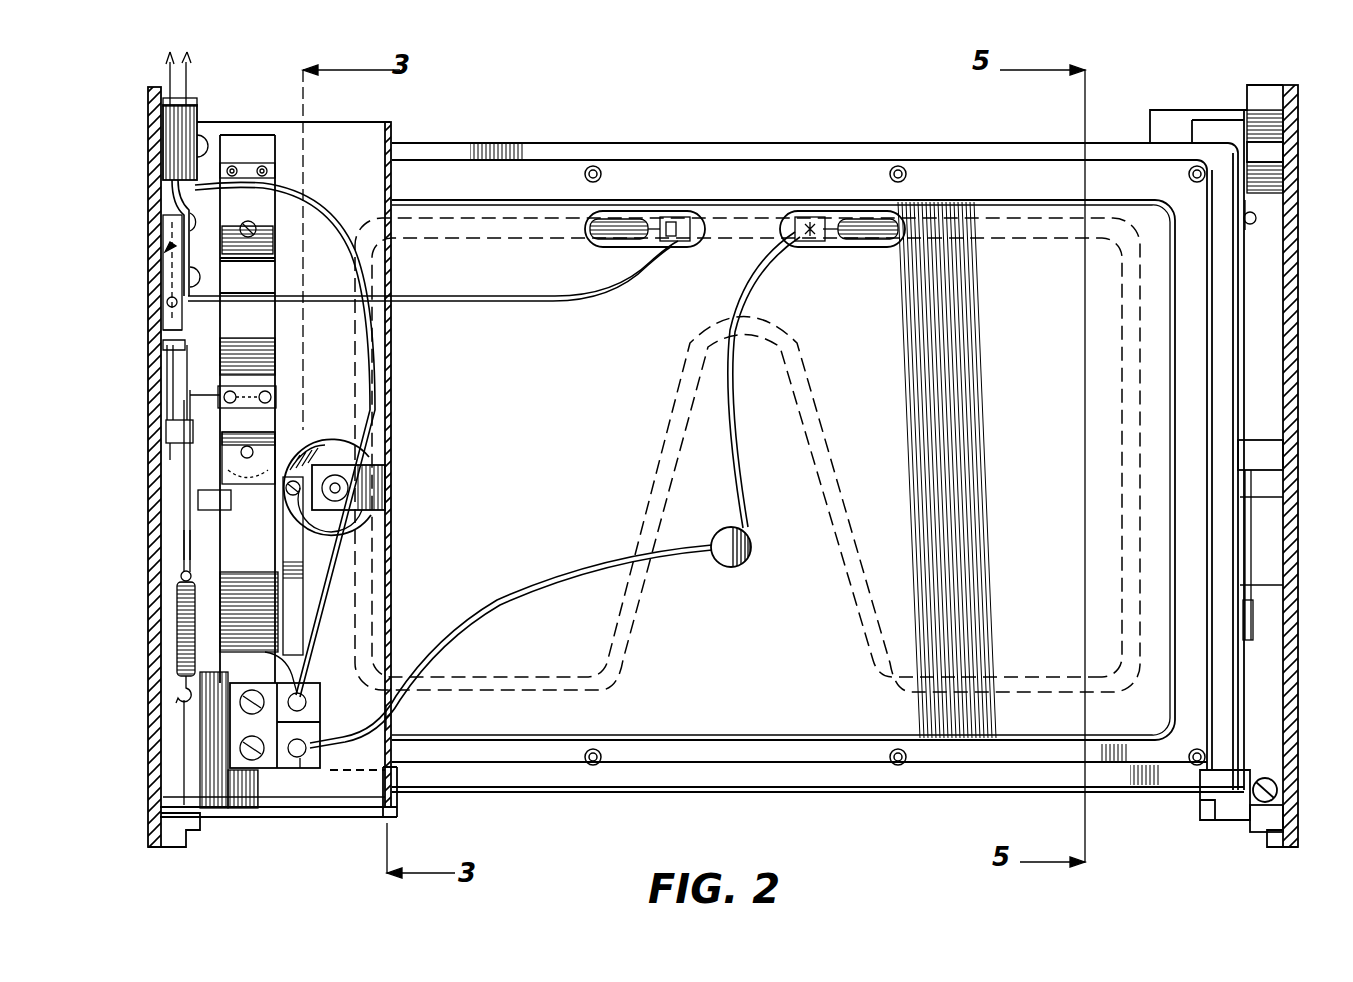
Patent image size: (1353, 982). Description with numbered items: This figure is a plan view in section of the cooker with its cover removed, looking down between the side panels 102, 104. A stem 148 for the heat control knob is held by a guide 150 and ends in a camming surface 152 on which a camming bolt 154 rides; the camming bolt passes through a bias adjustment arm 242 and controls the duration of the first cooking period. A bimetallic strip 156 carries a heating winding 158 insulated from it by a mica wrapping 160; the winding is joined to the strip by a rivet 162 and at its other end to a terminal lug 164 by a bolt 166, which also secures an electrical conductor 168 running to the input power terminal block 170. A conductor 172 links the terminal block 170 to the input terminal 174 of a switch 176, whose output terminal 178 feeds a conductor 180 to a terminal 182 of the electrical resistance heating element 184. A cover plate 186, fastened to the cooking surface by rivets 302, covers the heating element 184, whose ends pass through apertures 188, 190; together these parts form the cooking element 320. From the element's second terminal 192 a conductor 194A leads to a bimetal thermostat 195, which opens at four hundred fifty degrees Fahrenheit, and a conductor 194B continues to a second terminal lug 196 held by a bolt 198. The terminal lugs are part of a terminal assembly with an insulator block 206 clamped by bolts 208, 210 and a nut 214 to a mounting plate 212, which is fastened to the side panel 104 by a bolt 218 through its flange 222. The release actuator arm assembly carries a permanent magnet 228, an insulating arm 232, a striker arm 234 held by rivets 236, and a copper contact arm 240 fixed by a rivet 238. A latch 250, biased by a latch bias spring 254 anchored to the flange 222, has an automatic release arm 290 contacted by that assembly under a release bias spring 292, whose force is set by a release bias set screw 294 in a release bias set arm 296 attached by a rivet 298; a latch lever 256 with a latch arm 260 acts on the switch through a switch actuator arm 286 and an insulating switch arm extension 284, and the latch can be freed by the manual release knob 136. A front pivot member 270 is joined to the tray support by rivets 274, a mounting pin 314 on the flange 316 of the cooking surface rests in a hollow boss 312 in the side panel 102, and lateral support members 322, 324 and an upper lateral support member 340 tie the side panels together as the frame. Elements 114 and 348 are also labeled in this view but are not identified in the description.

The side panel 102 is at (1292, 292).
The side panel 104 is at (150, 275).
The bottom bracket 114 is at (1212, 800).
The manual release knob 136 is at (200, 498).
The stem 148 is at (385, 488).
The guide 150 is at (380, 500).
The camming surface 152 is at (392, 432).
The camming bolt 154 is at (300, 455).
The bimetallic strip 156 is at (184, 540).
The heating winding 158 is at (183, 570).
The mica wrapping 160 is at (180, 662).
The rivet 162 is at (250, 572).
The terminal lug 164 is at (315, 692).
The bolt 166 is at (395, 720).
The electrical conductor 168 is at (305, 610).
The input power terminal block 170 is at (163, 140).
The electrical conductor 172 is at (160, 195).
The input terminal 174 is at (163, 217).
The switch 176 is at (162, 246).
The output terminal 178 is at (167, 302).
The electrical conductor 180 is at (340, 298).
The terminal 182 is at (680, 217).
The electrical resistance heating element 184 is at (600, 238).
The cover plate 186 is at (742, 213).
The aperture 188 is at (622, 217).
The aperture 190 is at (852, 217).
The second terminal 192 is at (815, 247).
The electrical conductor 194A is at (725, 305).
The electrical conductor 194B is at (585, 568).
The thermostat 195 is at (740, 567).
The second terminal lug 196 is at (300, 770).
The bolt 198 is at (300, 758).
The insulator block 206 is at (240, 750).
The bolt 208 is at (205, 770).
The bolt 210 is at (240, 705).
The mounting plate 212 is at (320, 790).
The nut 214 is at (1258, 222).
The bolt 218 is at (228, 820).
The flange 222 is at (178, 695).
The permanent magnet 228 is at (265, 440).
The insulating arm 232 is at (170, 420).
The striker arm 234 is at (165, 330).
The rivets 236 is at (272, 390).
The rivet 238 is at (370, 530).
The copper contact arm 240 is at (268, 397).
The bias adjustment arm 242 is at (372, 557).
The latch 250 is at (184, 520).
The latch bias spring 254 is at (178, 615).
The latch lever 256 is at (168, 458).
The latch arm 260 is at (168, 437).
The front pivot member 270 is at (1255, 590).
The rivets 274 is at (1255, 615).
The switch arm extension 284 is at (163, 345).
The switch actuator arm 286 is at (186, 398).
The automatic release arm 290 is at (190, 395).
The release bias spring 292 is at (270, 350).
The release bias set screw 294 is at (300, 232).
The release bias set arm 296 is at (256, 228).
The rivet 298 is at (275, 170).
The rivets 302 is at (900, 166).
The hollow boss 312 is at (1262, 458).
The mounting pin 314 is at (1250, 500).
The flange 316 is at (1253, 565).
The cooking element 320 is at (783, 470).
The lateral support member 322 is at (1255, 530).
The lateral support member 324 is at (1160, 110).
The upper lateral support member 340 is at (275, 820).
The cable 348 is at (165, 75).